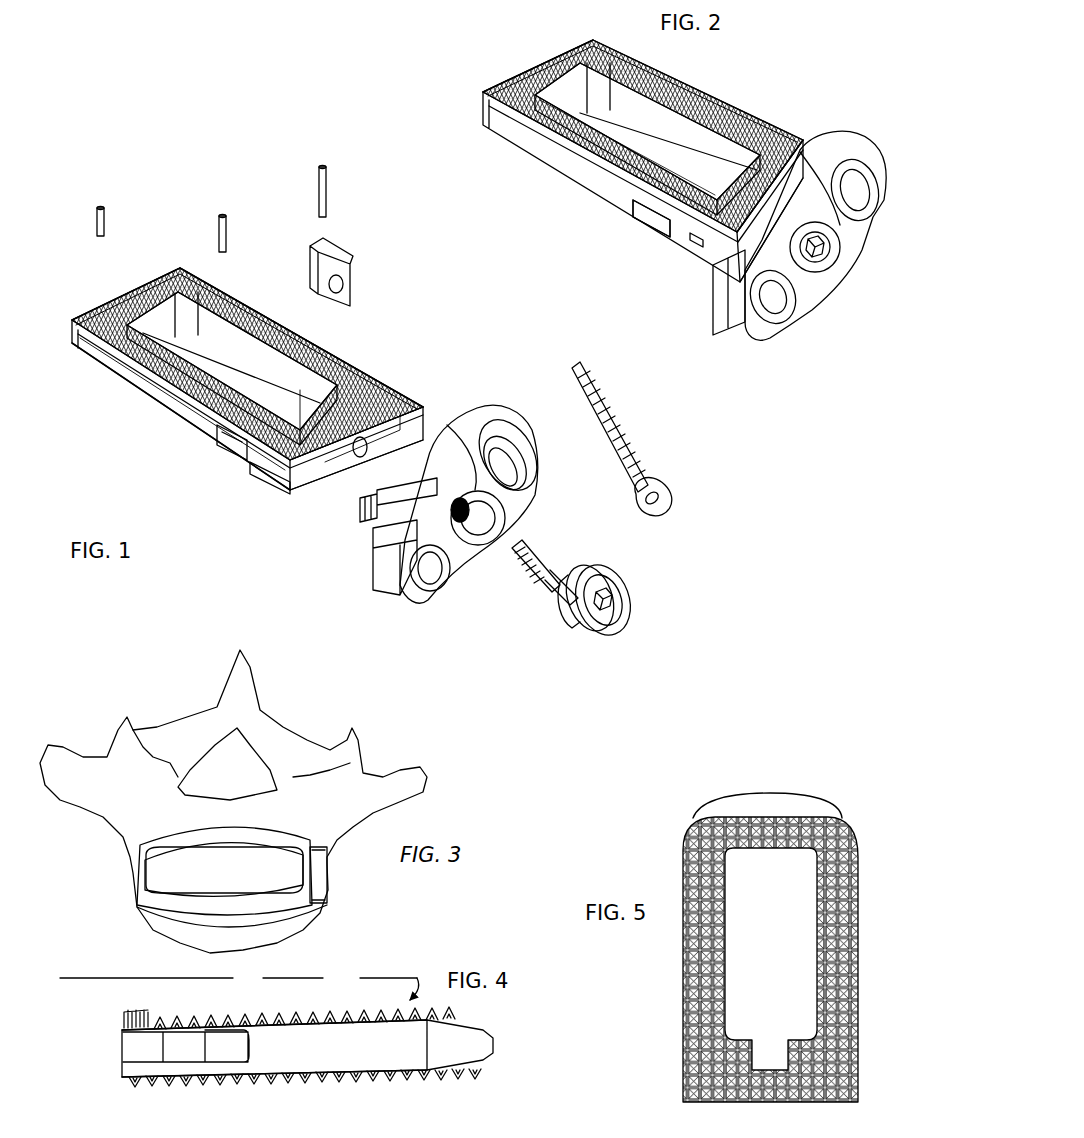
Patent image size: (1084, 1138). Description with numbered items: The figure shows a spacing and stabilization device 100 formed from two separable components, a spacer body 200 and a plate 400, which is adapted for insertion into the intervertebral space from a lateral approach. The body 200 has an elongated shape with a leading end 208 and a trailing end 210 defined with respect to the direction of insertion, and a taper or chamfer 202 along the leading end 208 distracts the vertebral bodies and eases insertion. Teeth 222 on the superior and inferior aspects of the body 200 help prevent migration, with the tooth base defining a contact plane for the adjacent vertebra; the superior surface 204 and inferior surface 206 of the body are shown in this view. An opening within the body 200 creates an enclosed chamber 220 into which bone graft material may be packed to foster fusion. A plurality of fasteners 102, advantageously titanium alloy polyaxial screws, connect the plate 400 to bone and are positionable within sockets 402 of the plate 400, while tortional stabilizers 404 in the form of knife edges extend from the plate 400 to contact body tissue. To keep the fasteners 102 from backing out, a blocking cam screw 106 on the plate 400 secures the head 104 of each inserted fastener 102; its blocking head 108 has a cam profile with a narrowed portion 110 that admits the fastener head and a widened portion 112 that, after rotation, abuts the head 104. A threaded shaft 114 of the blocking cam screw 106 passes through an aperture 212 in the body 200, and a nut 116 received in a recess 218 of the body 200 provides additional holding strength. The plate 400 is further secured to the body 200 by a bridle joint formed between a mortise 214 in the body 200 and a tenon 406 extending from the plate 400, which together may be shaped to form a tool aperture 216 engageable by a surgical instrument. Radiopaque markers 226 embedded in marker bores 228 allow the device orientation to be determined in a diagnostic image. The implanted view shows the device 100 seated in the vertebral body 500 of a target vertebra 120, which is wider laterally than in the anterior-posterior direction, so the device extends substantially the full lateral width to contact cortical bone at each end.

In FIG. 1, the spacing and stabilization device 100 is at (590, 287).
In FIG. 3, the spacing and stabilization device 100 is at (186, 901).
In FIG. 1, the fasteners 102 is at (661, 475).
In FIG. 1, the head 104 is at (660, 483).
In FIG. 1, the blocking cam screw 106 is at (610, 630).
In FIG. 2, the blocking cam screw 106 is at (805, 267).
In FIG. 1, the blocking head 108 is at (613, 590).
In FIG. 1, the narrowed portion 110 is at (582, 631).
In FIG. 1, the widened portion 112 is at (552, 590).
In FIG. 1, the threaded shaft 114 is at (547, 570).
In FIG. 1, the nut 116 is at (343, 260).
In FIG. 3, the vertebra 120 is at (435, 792).
In FIG. 1, the spacer body 200 is at (274, 318).
In FIG. 2, the spacer body 200 is at (547, 150).
In FIG. 3, the spacer body 200 is at (133, 903).
In FIG. 4, the spacer body 200 is at (105, 1022).
In FIG. 5, the spacer body 200 is at (657, 873).
In FIG. 1, the taper or chamfer 202 is at (128, 283).
In FIG. 2, the taper or chamfer 202 is at (493, 67).
In FIG. 4, the taper or chamfer 202 is at (490, 1022).
In FIG. 5, the taper or chamfer 202 is at (800, 803).
In FIG. 1, the textured top surface 204 is at (260, 287).
In FIG. 1, the lower surface 206 is at (143, 417).
In FIG. 4, the lower surface 206 is at (397, 1090).
In FIG. 1, the leading end 208 is at (78, 288).
In FIG. 2, the leading end 208 is at (523, 45).
In FIG. 1, the trailing end 210 is at (440, 425).
In FIG. 2, the trailing end 210 is at (680, 260).
In FIG. 1, the aperture 212 is at (405, 467).
In FIG. 1, the mortise 214 is at (260, 460).
In FIG. 4, the mortise 214 is at (147, 1048).
In FIG. 1, the tool aperture 216 is at (207, 430).
In FIG. 2, the tool aperture 216 is at (723, 223).
In FIG. 1, the recess 218 is at (298, 362).
In FIG. 5, the recess 218 is at (770, 1047).
In FIG. 2, the chamber 220 is at (640, 103).
In FIG. 5, the chamber 220 is at (790, 913).
In FIG. 2, the teeth 222 is at (673, 67).
In FIG. 4, the teeth 222 is at (187, 1088).
In FIG. 1, the radiopaque markers 226 is at (322, 183).
In FIG. 1, the marker bores 228 is at (200, 407).
In FIG. 1, the plate 400 is at (363, 590).
In FIG. 2, the plate 400 is at (768, 327).
In FIG. 1, the sockets 402 is at (517, 460).
In FIG. 2, the sockets 402 is at (820, 180).
In FIG. 1, the tortional stabilizers 404 is at (393, 480).
In FIG. 2, the tortional stabilizers 404 is at (723, 220).
In FIG. 1, the tenon 406 is at (380, 543).
In FIG. 3, the vertebral body 500 is at (282, 795).